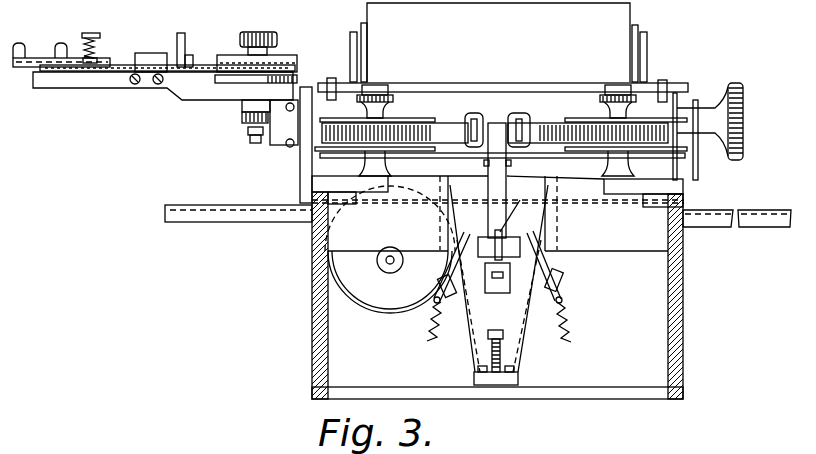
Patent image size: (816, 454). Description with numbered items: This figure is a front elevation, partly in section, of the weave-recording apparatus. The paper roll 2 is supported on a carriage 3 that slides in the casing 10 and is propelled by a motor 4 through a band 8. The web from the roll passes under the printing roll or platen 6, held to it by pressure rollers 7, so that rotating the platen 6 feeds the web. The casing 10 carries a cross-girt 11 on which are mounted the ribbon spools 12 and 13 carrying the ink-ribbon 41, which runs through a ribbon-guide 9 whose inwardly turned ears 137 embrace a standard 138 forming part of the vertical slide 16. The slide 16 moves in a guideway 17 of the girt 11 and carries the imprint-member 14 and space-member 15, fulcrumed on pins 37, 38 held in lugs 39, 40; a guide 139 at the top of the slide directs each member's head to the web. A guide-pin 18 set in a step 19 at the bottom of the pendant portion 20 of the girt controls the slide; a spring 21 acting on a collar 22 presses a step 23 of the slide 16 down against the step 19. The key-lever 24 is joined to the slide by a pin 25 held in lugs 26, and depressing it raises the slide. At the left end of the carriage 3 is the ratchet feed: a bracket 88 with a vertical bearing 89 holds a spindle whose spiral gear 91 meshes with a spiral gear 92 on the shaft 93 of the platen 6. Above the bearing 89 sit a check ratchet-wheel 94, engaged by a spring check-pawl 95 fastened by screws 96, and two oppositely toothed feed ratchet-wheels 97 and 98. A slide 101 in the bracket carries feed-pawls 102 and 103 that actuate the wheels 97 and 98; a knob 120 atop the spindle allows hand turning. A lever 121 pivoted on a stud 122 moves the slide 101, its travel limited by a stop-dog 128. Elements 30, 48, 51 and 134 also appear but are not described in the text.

The roll 2 is at (498, 42).
The carriage 3 is at (690, 192).
The motor 4 is at (372, 320).
The printing roll or platen 6 is at (454, 82).
The pressure rollers 7 is at (380, 88).
The band 8 is at (580, 204).
The ribbon-guide 9 is at (499, 122).
The casing 10 is at (683, 340).
The cross-girt 11 is at (614, 247).
The ribbon spool 12 is at (412, 122).
The ribbon spool 13 is at (572, 122).
The imprint-member 14 is at (532, 236).
The space-member 15 is at (463, 236).
The vertical plate or slide 16 is at (530, 333).
The guideway 17 is at (432, 232).
The guide-pin 18 is at (497, 330).
The step 19 is at (518, 378).
The pendant portion 20 is at (520, 360).
The spring 21 is at (492, 352).
The collar 22 is at (488, 332).
The step 23 is at (478, 369).
The key-lever 24 is at (518, 207).
The pin 25 is at (510, 280).
The lugs 26 is at (480, 262).
The hub 30 is at (438, 268).
The pin 37 is at (558, 276).
The pin 38 is at (441, 280).
The lug 39 is at (560, 288).
The lug 40 is at (443, 290).
The ink-ribbon 41 is at (450, 124).
The spring 48 is at (427, 341).
The pivot pin 51 is at (434, 300).
The bracket 88 is at (190, 96).
The vertical bearing 89 is at (242, 106).
The spiral gear 91 is at (242, 118).
The spiral gear 92 is at (255, 143).
The shaft or spindle 93 is at (300, 140).
The check ratchet-wheel 94 is at (297, 78).
The check-pawl or dog 95 is at (210, 84).
The screws 96 is at (140, 84).
The feed ratchet-wheel 97 is at (285, 55).
The feed ratchet-wheel 98 is at (300, 68).
The slide 101 is at (38, 67).
The feed-pawl 102 is at (243, 37).
The feed-pawl 103 is at (245, 76).
The knob 120 is at (276, 40).
The lever 121 is at (83, 72).
The stud 122 is at (100, 50).
The stop-dog 128 is at (160, 45).
The guide 134 is at (42, 52).
The ears 137 is at (511, 163).
The standard 138 is at (487, 190).
The guide 139 is at (520, 118).